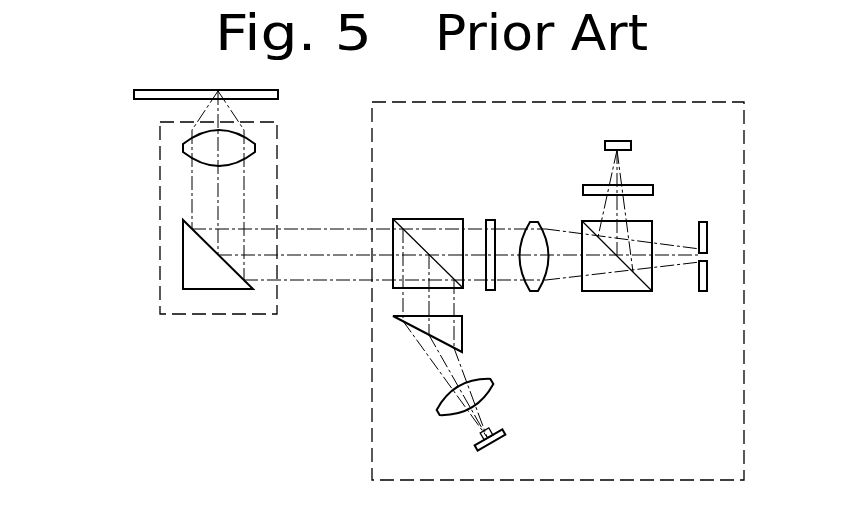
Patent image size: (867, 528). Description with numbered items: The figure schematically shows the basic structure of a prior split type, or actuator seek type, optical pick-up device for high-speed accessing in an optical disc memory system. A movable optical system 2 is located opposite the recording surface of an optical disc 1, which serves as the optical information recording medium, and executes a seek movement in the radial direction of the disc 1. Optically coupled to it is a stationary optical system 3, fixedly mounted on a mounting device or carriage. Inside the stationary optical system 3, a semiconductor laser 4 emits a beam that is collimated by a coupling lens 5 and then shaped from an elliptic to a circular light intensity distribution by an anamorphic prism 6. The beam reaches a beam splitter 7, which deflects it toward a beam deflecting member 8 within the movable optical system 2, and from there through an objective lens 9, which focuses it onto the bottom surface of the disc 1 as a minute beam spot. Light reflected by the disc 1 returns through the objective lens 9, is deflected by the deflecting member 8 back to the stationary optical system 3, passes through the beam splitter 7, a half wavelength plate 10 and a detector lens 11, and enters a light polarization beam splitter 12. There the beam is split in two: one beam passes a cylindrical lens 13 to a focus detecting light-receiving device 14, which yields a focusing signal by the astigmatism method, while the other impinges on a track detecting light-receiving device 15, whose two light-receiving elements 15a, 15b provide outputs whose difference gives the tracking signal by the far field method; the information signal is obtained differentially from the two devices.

The optical disc 1 is at (162, 90).
The movable optical system 2 is at (160, 201).
The stationary optical system 3 is at (548, 102).
The semiconductor laser 4 is at (490, 447).
The coupling lens 5 is at (450, 405).
The anamorphic prism 6 is at (400, 322).
The beam splitter 7 is at (393, 290).
The beam deflecting member 8 is at (190, 258).
The objective lens 9 is at (188, 150).
The half wavelength plate 10 is at (490, 218).
The detector lens 11 is at (535, 222).
The light polarization beam splitter 12 is at (613, 288).
The cylindrical lens 13 is at (655, 190).
The focus detecting light-receiving device 14 is at (620, 140).
The track detecting light-receiving device 15 is at (752, 257).
The light-receiving element 15a is at (703, 222).
The light-receiving element 15b is at (708, 272).